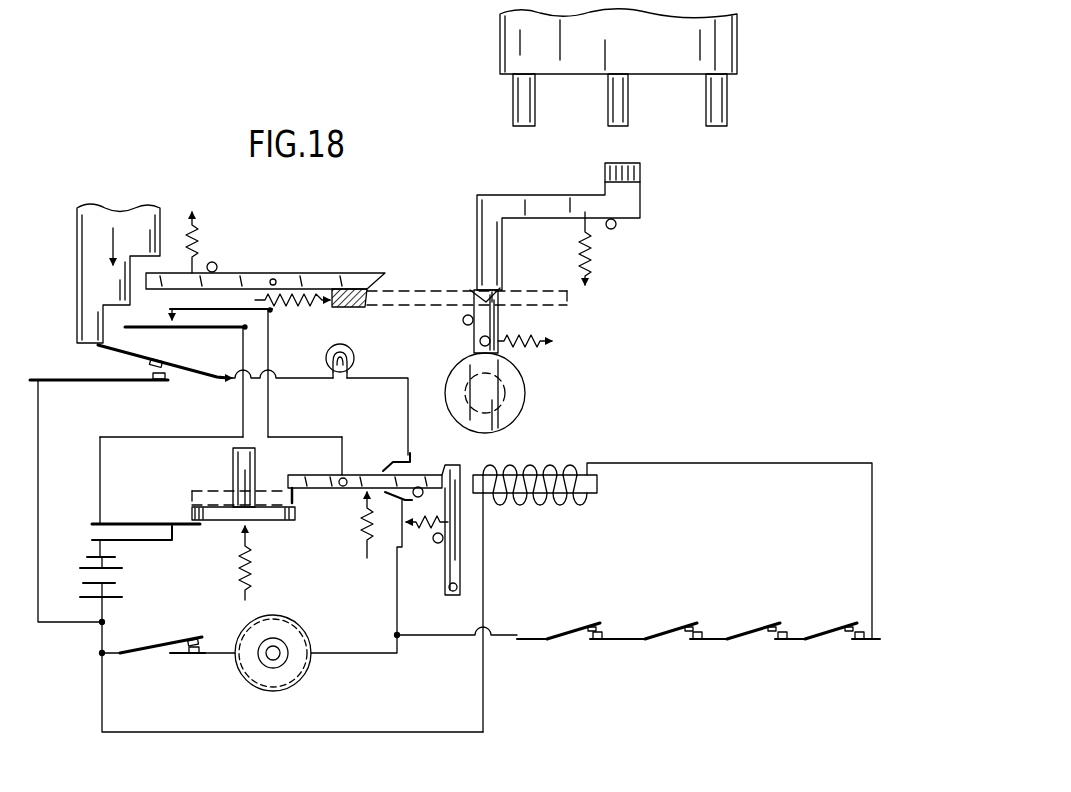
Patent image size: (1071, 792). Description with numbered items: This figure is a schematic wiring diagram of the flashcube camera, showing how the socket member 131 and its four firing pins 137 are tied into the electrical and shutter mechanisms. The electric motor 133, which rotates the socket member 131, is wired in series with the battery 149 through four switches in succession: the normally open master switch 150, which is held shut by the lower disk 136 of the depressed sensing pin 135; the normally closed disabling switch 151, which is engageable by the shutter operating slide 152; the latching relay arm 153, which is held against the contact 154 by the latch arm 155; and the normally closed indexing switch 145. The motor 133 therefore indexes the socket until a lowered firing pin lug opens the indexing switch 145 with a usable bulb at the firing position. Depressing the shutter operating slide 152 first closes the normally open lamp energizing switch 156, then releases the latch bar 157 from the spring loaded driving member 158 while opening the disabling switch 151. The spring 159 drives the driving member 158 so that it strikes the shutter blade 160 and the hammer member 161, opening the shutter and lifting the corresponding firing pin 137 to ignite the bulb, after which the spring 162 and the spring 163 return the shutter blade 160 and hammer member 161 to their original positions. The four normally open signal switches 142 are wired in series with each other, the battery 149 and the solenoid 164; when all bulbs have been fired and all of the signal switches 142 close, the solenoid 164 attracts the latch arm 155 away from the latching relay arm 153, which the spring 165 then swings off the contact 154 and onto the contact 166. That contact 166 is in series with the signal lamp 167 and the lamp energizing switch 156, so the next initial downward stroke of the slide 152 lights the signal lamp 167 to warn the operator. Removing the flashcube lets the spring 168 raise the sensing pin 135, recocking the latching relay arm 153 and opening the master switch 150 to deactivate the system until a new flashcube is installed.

The socket member 131 is at (722, 42).
The firing pins 137 is at (530, 115).
The hammer member 161 is at (565, 205).
The spring 163 is at (592, 248).
The spring loaded driving member 158 is at (350, 307).
The shutter blade 160 is at (516, 400).
The spring 162 is at (537, 355).
The shutter operating slide 152 is at (145, 215).
The latch bar 157 is at (308, 278).
The spring 159 is at (278, 305).
The disabling switch 151 is at (176, 333).
The lamp energizing switch 156 is at (146, 388).
The signal lamp 167 is at (354, 357).
The latching relay arm 153 is at (360, 473).
The contact 166 is at (413, 462).
The spring 165 is at (358, 520).
The contact 154 is at (390, 497).
The latch arm 155 is at (452, 570).
The sensing pin 135 is at (240, 465).
The lower disk 136 is at (268, 512).
The master switch 150 is at (152, 546).
The battery 149 is at (128, 585).
The spring 168 is at (252, 577).
The indexing switch 145 is at (162, 658).
The electric motor 133 is at (304, 672).
The solenoid 164 is at (575, 505).
The signal switches 142 is at (833, 642).